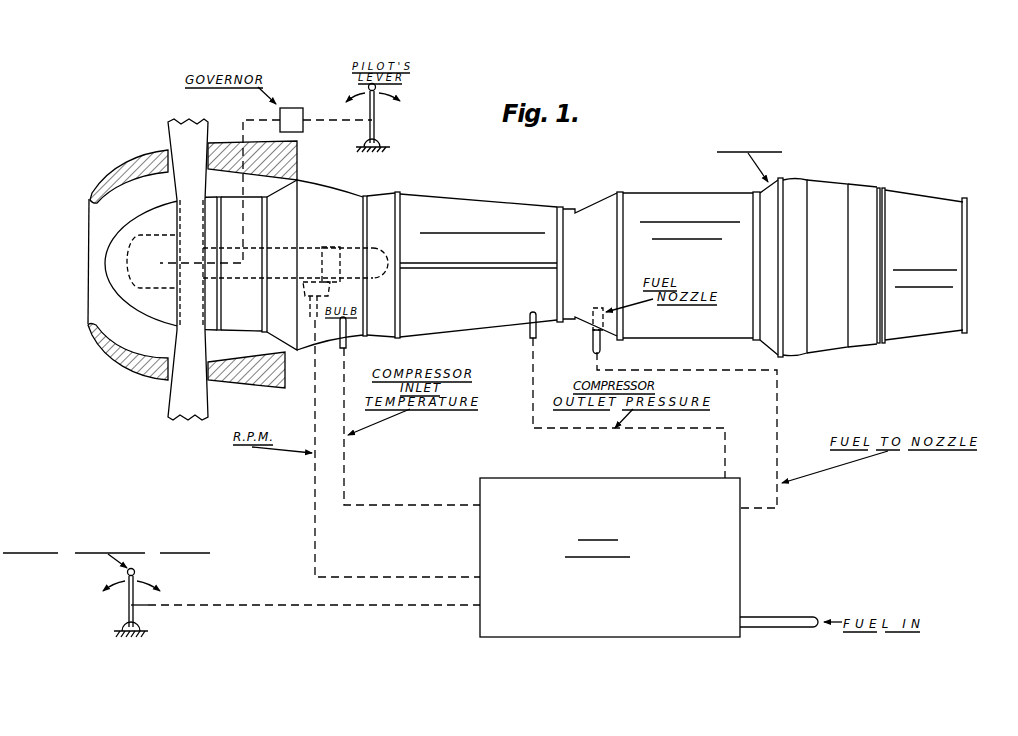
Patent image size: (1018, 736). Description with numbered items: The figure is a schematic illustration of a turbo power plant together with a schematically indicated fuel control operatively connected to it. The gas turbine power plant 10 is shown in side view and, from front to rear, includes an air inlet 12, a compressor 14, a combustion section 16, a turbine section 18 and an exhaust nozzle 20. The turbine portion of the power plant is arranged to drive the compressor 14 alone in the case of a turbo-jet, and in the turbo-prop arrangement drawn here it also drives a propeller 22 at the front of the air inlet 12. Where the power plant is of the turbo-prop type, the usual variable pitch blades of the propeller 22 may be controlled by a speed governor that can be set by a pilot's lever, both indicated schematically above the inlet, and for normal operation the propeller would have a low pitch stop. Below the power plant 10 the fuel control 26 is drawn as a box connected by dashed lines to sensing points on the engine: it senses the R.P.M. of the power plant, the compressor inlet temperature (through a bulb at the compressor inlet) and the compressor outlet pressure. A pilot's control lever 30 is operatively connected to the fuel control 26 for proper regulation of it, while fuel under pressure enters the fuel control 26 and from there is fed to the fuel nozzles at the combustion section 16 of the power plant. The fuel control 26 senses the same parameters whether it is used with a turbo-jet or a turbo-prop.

The gas turbine power plant 10 is at (518, 195).
The air inlet 12 is at (280, 337).
The compressor 14 is at (420, 205).
The combustion section 16 is at (663, 192).
The turbine section 18 is at (770, 197).
The exhaust nozzle 20 is at (920, 205).
The propeller 22 is at (138, 244).
The fuel control 26 is at (603, 634).
The pilot's control lever 30 is at (122, 589).